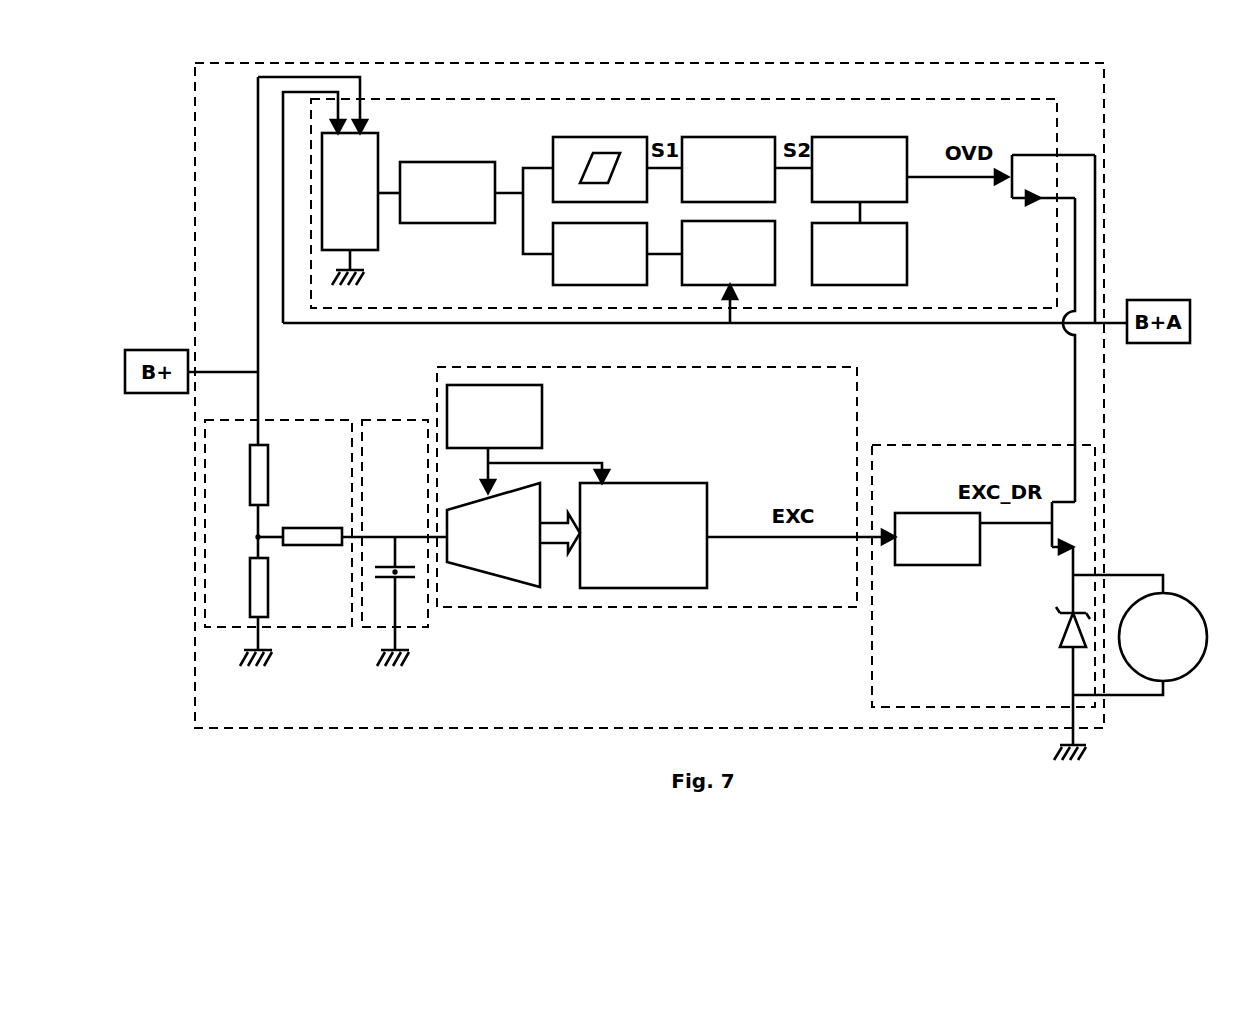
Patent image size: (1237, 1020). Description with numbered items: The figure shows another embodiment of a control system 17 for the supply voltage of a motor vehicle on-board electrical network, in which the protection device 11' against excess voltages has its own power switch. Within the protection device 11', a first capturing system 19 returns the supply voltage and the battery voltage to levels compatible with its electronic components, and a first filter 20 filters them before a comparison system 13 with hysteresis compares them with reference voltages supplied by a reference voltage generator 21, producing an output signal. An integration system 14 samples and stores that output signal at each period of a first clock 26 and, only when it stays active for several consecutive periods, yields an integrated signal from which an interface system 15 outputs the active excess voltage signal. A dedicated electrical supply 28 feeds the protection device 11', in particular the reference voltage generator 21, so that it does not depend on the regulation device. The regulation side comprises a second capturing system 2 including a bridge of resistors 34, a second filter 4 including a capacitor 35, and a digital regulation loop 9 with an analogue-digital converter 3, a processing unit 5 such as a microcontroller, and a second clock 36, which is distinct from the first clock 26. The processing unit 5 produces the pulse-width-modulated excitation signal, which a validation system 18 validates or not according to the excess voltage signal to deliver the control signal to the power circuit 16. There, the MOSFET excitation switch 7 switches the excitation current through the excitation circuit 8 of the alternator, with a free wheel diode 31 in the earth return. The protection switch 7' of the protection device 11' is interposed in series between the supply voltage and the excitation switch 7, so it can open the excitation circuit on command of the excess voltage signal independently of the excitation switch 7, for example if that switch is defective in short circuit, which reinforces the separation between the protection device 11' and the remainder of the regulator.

The second capturing system 2 is at (302, 420).
The analogue-digital converter 3 is at (497, 578).
The second filter 4 is at (378, 420).
The processing unit 5 is at (660, 483).
The excitation switch 7 is at (1045, 541).
The protection switch 7' is at (1031, 199).
The excitation circuit 8 is at (1193, 665).
The digital regulation loop 9 is at (785, 612).
The protection device 11' is at (702, 189).
The comparison system 13 is at (612, 137).
The integration system 14 is at (747, 137).
The interface system 15 is at (872, 137).
The power circuit 16 is at (870, 657).
The control system 17 is at (1108, 200).
The validation system 18 is at (937, 568).
The first capturing system 19 is at (378, 232).
The first filter 20 is at (462, 162).
The reference voltage generator 21 is at (553, 270).
The first clock 26 is at (812, 270).
The dedicated electrical supply 28 is at (682, 272).
The free wheel diode 31 is at (1063, 630).
The bridge of resistors 34 is at (262, 543).
The capacitor 35 is at (392, 578).
The second clock 36 is at (545, 425).